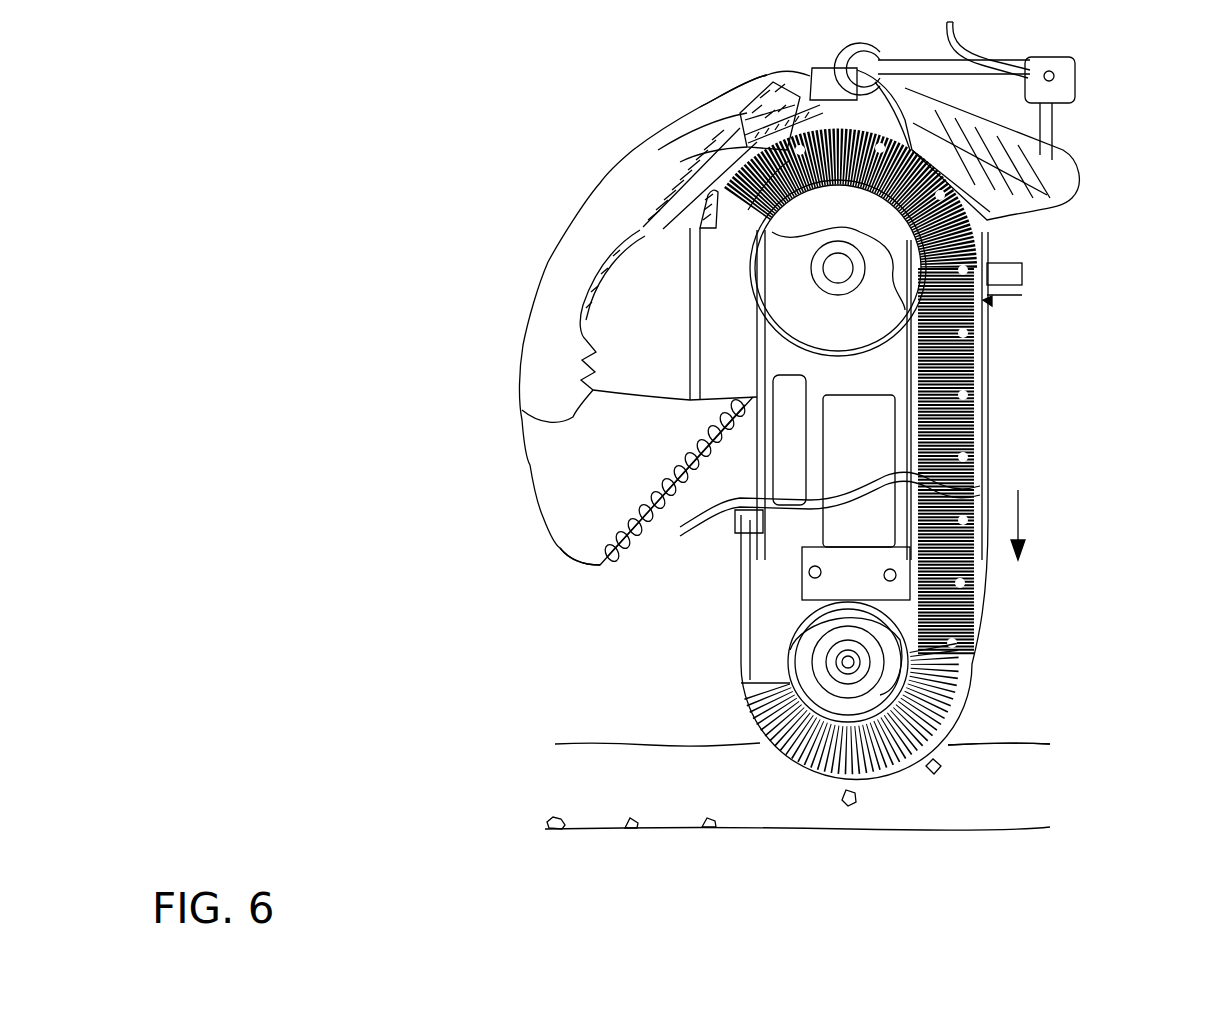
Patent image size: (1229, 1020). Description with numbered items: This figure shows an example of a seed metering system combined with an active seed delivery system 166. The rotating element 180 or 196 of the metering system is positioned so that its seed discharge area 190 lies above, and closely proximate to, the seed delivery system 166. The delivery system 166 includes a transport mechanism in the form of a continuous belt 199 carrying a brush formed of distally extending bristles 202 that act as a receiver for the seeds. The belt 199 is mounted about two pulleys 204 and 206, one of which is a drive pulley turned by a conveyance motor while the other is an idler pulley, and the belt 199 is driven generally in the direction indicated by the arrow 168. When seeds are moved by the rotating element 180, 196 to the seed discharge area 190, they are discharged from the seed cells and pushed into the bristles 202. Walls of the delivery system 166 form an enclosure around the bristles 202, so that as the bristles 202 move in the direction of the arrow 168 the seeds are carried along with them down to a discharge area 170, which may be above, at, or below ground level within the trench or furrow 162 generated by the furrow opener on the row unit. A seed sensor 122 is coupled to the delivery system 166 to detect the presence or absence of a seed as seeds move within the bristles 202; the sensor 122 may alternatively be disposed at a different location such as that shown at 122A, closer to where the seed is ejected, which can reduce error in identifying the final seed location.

The seed discharge area 190 is at (812, 38).
The rotating element 180 is at (566, 190).
The rotating element 196 is at (509, 365).
The pulley 204 is at (900, 257).
The seed sensor 122 is at (1022, 270).
The bristles 202 is at (990, 302).
The belt 199 is at (910, 390).
The seed delivery system 166 is at (992, 460).
The arrow 168 is at (1018, 512).
The pulley 206 is at (862, 697).
The discharge area 170 is at (893, 772).
The alternative seed sensor location 122A is at (940, 768).
The trench or furrow 162 is at (1056, 805).